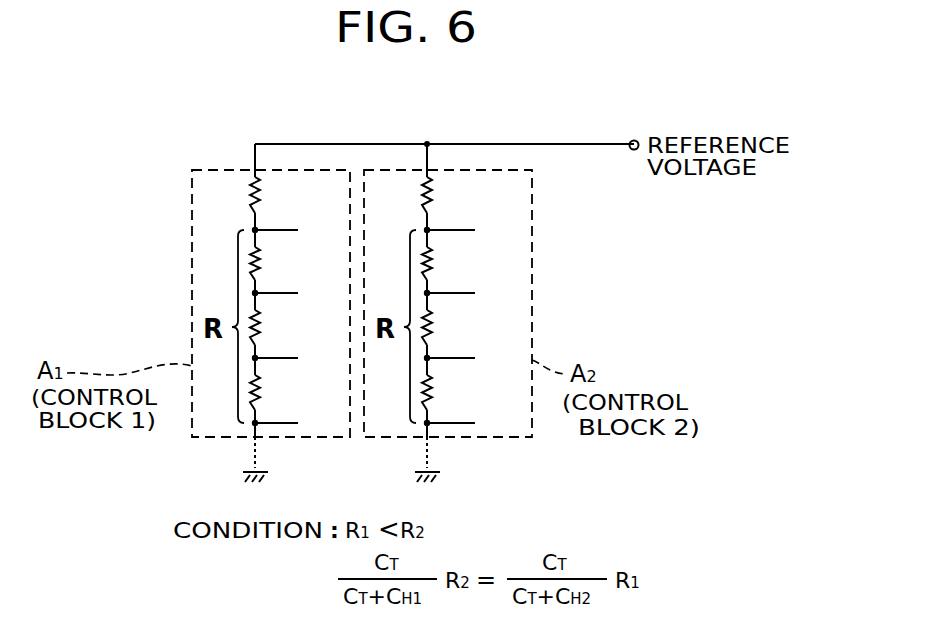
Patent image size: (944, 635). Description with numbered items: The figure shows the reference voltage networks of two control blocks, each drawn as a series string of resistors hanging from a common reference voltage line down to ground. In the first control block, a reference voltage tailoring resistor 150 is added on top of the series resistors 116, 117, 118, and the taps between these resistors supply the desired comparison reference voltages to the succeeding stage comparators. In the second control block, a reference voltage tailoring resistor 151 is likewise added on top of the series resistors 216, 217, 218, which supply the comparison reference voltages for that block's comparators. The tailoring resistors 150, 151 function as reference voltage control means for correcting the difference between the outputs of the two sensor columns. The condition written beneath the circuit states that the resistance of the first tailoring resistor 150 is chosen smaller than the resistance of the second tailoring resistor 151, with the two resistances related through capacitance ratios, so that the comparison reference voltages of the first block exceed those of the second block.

The reference voltage tailoring resistor 150 is at (264, 191).
The resistor 116 is at (262, 268).
The resistor 117 is at (262, 330).
The resistor 118 is at (262, 395).
The reference voltage tailoring resistor 151 is at (436, 191).
The resistor 216 is at (434, 268).
The resistor 217 is at (434, 330).
The resistor 218 is at (434, 395).